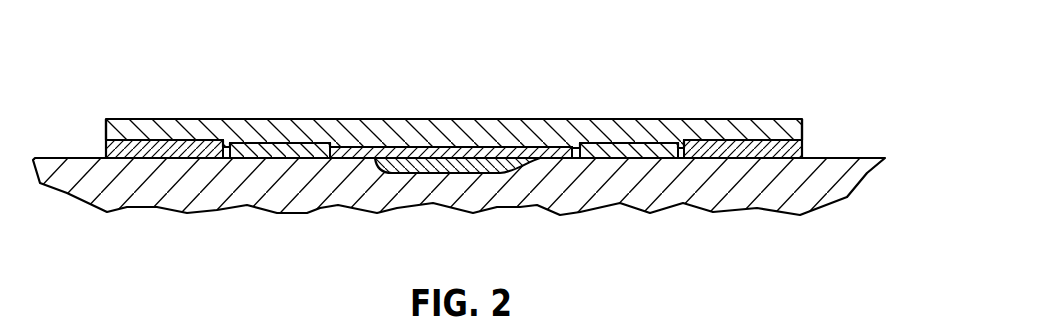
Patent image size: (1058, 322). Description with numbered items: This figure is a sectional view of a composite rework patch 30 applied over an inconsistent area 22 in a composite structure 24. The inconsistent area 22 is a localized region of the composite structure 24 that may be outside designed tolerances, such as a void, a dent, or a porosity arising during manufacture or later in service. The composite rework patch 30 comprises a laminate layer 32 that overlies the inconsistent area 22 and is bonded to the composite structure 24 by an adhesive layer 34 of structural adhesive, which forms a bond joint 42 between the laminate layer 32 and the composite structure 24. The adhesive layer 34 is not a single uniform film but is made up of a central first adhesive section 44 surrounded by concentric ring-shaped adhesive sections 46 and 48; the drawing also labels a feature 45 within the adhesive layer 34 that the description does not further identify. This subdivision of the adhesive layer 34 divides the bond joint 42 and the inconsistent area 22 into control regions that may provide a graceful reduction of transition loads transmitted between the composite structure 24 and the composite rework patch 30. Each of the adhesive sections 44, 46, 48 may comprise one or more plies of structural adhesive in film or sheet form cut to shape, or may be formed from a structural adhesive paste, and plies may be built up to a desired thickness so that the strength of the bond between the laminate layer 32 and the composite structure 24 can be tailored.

The inconsistent area 22 is at (483, 160).
The composite structure 24 is at (122, 185).
The composite rework patch 30 is at (700, 56).
The laminate layer 32 is at (148, 132).
The adhesive layer 34 is at (832, 136).
The bond joint 42 is at (85, 136).
The first adhesive section 44 is at (542, 152).
The bonding regions 45 is at (327, 129).
The ring shaped adhesive section 46 is at (632, 150).
The ring shaped adhesive section 48 is at (750, 150).